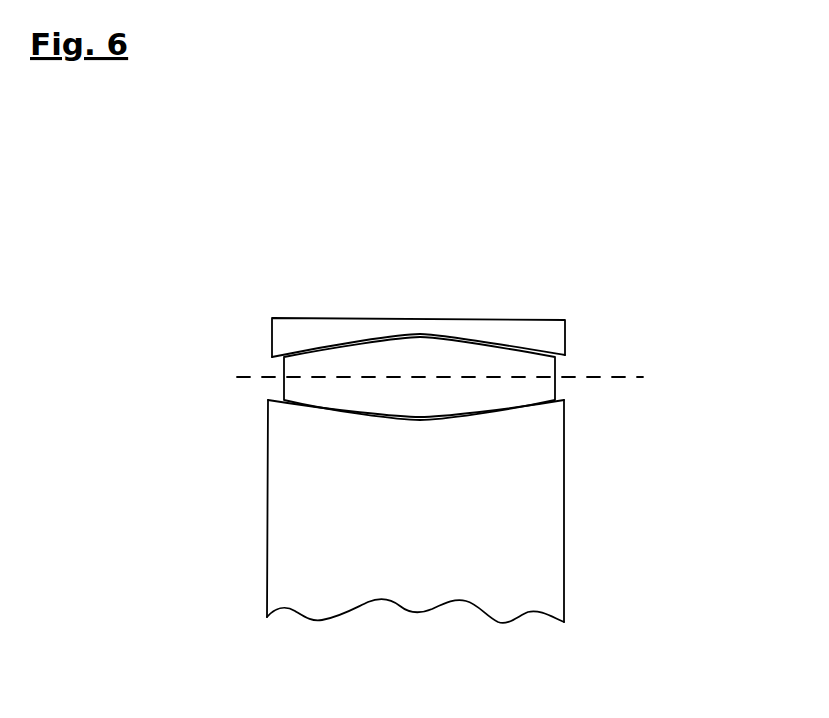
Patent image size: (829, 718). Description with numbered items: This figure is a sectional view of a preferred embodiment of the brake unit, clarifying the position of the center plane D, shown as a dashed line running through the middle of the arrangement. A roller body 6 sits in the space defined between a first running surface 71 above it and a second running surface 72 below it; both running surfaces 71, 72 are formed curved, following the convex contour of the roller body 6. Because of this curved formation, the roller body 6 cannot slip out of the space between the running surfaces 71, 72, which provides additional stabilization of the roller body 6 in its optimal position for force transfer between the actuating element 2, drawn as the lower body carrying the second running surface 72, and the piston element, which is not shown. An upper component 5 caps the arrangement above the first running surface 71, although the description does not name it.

The actuating element 2 is at (545, 498).
The retaining cap 5 is at (537, 338).
The roller bodies 6 is at (423, 358).
The first running surface 71 is at (561, 358).
The second running surface 72 is at (538, 400).
The center plane D is at (602, 377).